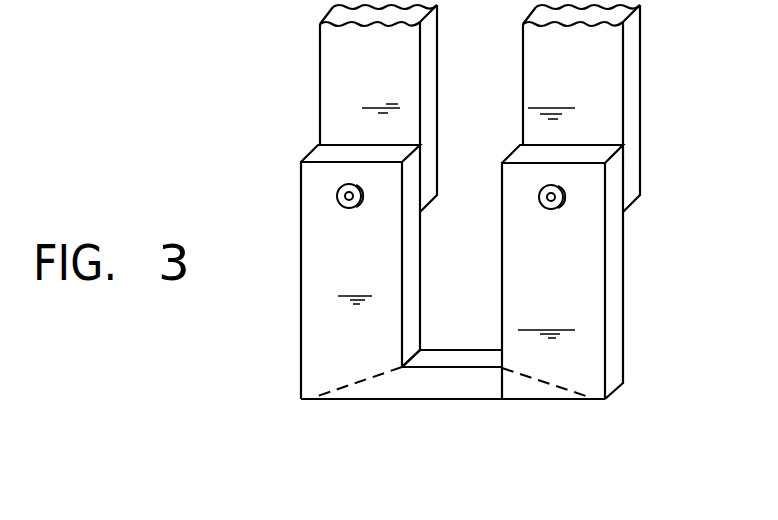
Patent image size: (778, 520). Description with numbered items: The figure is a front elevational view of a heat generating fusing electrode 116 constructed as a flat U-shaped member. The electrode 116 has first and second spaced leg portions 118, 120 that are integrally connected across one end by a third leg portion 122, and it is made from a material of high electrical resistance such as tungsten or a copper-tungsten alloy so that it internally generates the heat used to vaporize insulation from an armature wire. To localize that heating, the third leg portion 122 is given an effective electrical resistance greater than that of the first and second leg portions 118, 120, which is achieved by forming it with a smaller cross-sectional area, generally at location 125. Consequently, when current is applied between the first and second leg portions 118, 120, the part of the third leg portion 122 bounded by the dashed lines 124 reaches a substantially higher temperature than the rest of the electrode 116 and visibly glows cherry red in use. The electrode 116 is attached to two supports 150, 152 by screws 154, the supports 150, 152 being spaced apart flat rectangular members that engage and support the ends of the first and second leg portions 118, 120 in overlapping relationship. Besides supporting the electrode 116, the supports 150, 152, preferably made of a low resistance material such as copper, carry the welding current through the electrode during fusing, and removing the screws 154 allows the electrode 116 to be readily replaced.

The heat generating fusing electrode 116 is at (626, 372).
The first leg portion 118 is at (318, 293).
The second leg portion 120 is at (583, 315).
The third leg portion 122 is at (443, 388).
The dashed lines 124 is at (358, 385).
The location of smaller cross-sectional area 125 is at (465, 384).
The support 150 is at (338, 73).
The support 152 is at (593, 100).
The screws 154 is at (345, 208).